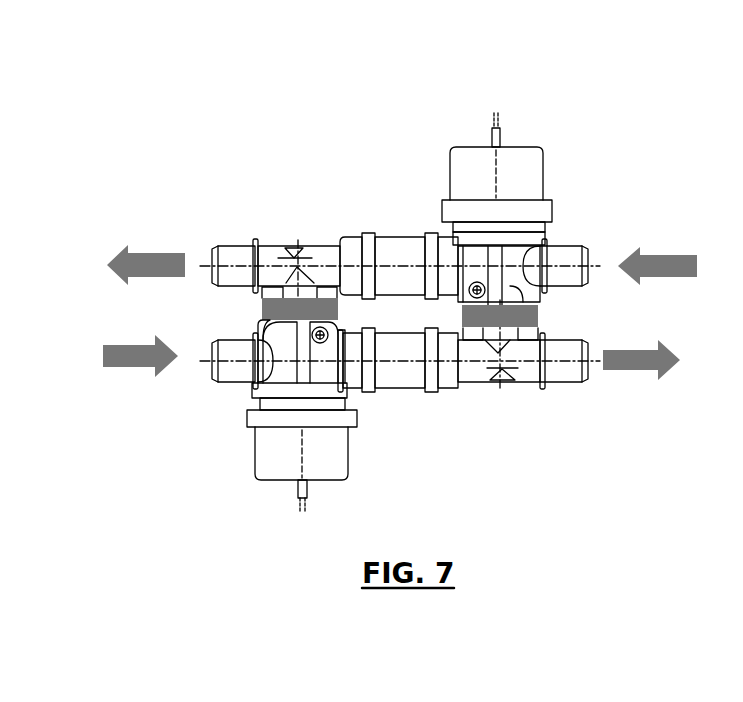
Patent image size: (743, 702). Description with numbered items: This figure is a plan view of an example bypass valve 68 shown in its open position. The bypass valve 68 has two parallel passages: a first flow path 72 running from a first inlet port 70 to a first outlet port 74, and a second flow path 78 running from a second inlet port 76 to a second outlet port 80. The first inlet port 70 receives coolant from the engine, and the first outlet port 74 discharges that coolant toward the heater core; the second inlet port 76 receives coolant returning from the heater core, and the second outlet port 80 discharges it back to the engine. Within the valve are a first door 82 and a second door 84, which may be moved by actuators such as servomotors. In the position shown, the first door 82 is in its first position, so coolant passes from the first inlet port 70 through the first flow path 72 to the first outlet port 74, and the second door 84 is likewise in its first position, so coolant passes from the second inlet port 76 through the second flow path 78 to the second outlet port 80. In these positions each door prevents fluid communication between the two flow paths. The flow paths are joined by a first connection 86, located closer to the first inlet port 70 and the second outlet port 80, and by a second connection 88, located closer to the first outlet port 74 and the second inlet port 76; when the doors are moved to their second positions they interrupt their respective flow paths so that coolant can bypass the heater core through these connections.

The bypass valve 68 is at (222, 54).
The first inlet port 70 is at (210, 372).
The first flow path 72 is at (388, 383).
The first outlet port 74 is at (588, 344).
The second inlet port 76 is at (590, 253).
The second flow path 78 is at (386, 244).
The second outlet port 80 is at (210, 253).
The first door 82 is at (338, 310).
The second door 84 is at (462, 308).
The first connection 86 is at (282, 292).
The second connection 88 is at (508, 332).